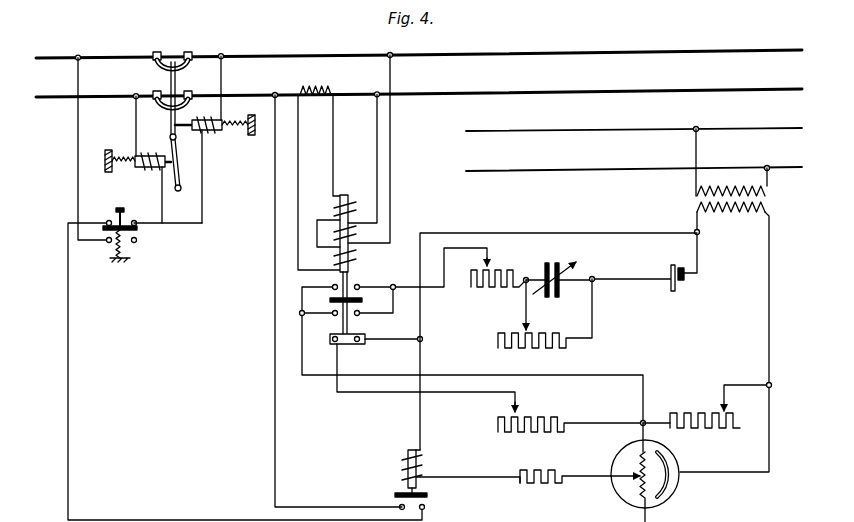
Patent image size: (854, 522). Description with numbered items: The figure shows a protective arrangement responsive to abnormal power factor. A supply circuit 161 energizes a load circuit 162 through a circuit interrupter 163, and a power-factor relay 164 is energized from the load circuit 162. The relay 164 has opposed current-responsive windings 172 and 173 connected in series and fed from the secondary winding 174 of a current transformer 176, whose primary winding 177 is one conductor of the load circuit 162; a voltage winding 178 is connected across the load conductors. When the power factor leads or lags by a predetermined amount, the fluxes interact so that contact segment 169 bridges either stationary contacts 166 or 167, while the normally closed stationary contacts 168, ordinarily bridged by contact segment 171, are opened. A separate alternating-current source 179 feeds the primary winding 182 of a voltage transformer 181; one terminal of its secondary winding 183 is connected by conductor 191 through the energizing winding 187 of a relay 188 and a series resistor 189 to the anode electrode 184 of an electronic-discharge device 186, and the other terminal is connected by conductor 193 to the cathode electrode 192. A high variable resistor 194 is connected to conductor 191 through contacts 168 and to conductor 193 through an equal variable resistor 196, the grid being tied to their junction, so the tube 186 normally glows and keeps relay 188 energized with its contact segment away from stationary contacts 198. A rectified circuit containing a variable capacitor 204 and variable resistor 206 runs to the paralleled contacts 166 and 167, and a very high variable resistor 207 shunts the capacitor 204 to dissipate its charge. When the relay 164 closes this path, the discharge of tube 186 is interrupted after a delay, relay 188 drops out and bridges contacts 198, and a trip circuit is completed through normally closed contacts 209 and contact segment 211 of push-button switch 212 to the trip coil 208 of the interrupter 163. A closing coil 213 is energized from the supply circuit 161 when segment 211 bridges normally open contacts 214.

The supply circuit 161 is at (97, 60).
The load circuit 162 is at (235, 58).
The circuit interrupter 163 is at (176, 84).
The power-factor relay 164 is at (364, 264).
The stationary contacts 166 is at (472, 354).
The stationary contacts 167 is at (332, 316).
The stationary contacts 168 is at (331, 343).
The moving contact segment 169 is at (360, 296).
The moving contact segment 171 is at (365, 333).
The current-responsive winding 172 is at (340, 210).
The current-responsive winding 173 is at (340, 260).
The secondary winding 174 is at (333, 104).
The current transformer 176 is at (313, 80).
The primary winding 177 is at (340, 92).
The voltage winding 178 is at (350, 234).
The alternating-current source 179 is at (486, 133).
The voltage transformer 181 is at (668, 205).
The primary winding 182 is at (768, 192).
The secondary winding 183 is at (765, 208).
The anode electrode 184 is at (620, 480).
The electronic-discharge device 186 is at (662, 473).
The energizing winding 187 is at (406, 455).
The relay 188 is at (387, 480).
The resistor 189 is at (544, 470).
The conductor 191 is at (540, 233).
The cathode electrode 192 is at (667, 492).
The conductor 193 is at (769, 322).
The variable resistor 194 is at (528, 414).
The variable resistor 196 is at (703, 412).
The stationary contacts 198 is at (425, 509).
The variable capacitor 204 is at (552, 260).
The variable resistor 206 is at (489, 268).
The variable resistor 207 is at (520, 349).
The trip coil 208 is at (216, 132).
The normally closed contacts 209 is at (106, 222).
The contact segment 211 is at (137, 238).
The push-button switch 212 is at (122, 212).
The closing coil 213 is at (142, 170).
The normally open contacts 214 is at (137, 243).